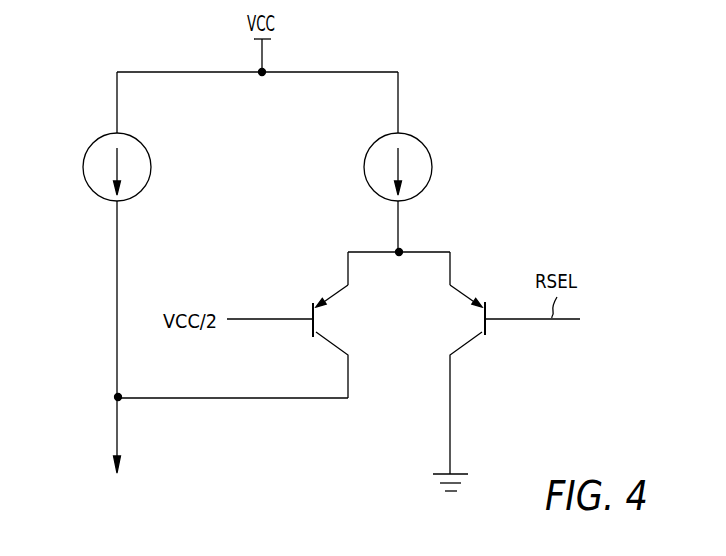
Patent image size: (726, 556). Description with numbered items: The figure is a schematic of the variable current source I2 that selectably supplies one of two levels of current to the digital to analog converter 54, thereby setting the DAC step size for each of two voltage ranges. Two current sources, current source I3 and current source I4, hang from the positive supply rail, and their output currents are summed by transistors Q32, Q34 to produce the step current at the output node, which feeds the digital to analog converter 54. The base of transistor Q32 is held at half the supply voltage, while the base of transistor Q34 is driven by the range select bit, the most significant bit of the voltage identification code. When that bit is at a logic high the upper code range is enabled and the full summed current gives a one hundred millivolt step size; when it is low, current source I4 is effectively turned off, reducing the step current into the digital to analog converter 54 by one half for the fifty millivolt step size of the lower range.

The variable current source I2 is at (557, 94).
The current source I3 is at (83, 163).
The current source I4 is at (432, 165).
The transistor Q32 is at (313, 336).
The transistor Q34 is at (485, 334).
The digital to analog converter 54 is at (117, 468).